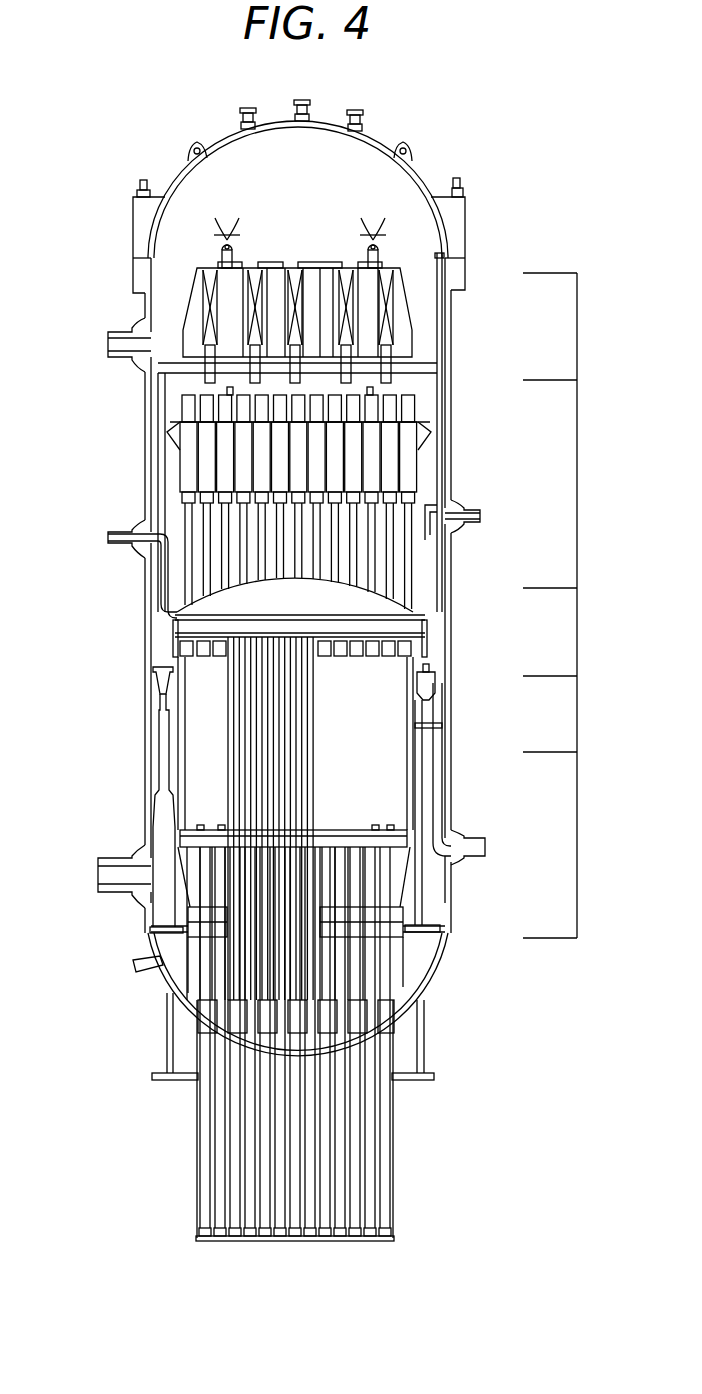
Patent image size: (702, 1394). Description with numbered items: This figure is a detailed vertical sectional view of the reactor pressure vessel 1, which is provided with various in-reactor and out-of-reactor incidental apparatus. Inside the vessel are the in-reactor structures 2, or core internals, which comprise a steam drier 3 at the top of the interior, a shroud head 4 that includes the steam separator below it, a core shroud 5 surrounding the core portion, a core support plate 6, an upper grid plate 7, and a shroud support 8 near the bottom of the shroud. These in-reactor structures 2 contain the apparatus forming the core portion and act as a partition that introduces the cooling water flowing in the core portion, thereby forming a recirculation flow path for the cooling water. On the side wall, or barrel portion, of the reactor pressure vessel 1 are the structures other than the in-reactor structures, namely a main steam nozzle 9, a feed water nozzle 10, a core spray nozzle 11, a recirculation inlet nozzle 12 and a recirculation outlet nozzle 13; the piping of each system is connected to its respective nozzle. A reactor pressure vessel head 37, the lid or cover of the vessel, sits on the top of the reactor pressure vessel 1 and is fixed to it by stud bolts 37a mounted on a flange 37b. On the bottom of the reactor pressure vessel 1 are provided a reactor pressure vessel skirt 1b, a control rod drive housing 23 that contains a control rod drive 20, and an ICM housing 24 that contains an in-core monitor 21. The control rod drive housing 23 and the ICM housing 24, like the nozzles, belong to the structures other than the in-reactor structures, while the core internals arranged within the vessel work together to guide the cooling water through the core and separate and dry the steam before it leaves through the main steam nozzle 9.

The reactor pressure vessel 1 is at (452, 331).
The reactor pressure vessel skirt 1b is at (428, 1048).
The in-reactor structures 2 is at (577, 598).
The steam drier 3 is at (420, 308).
The shroud head 4 is at (420, 412).
The core shroud 5 is at (438, 660).
The core support plate 6 is at (360, 830).
The upper grid plate 7 is at (420, 619).
The shroud support 8 is at (400, 958).
The main steam nozzle 9 is at (130, 325).
The feed water nozzle 10 is at (470, 498).
The core spray nozzle 11 is at (130, 527).
The recirculation inlet nozzle 12 is at (462, 840).
The recirculation outlet nozzle 13 is at (118, 853).
The control rod drive 20 is at (375, 1242).
The in-core monitor (ICM) 21 is at (370, 990).
The control rod drive housing 23 is at (392, 1140).
The ICM housing 24 is at (367, 1190).
The reactor pressure vessel head 37 is at (377, 143).
The stud bolts 37a is at (462, 178).
The flange 37b is at (467, 225).